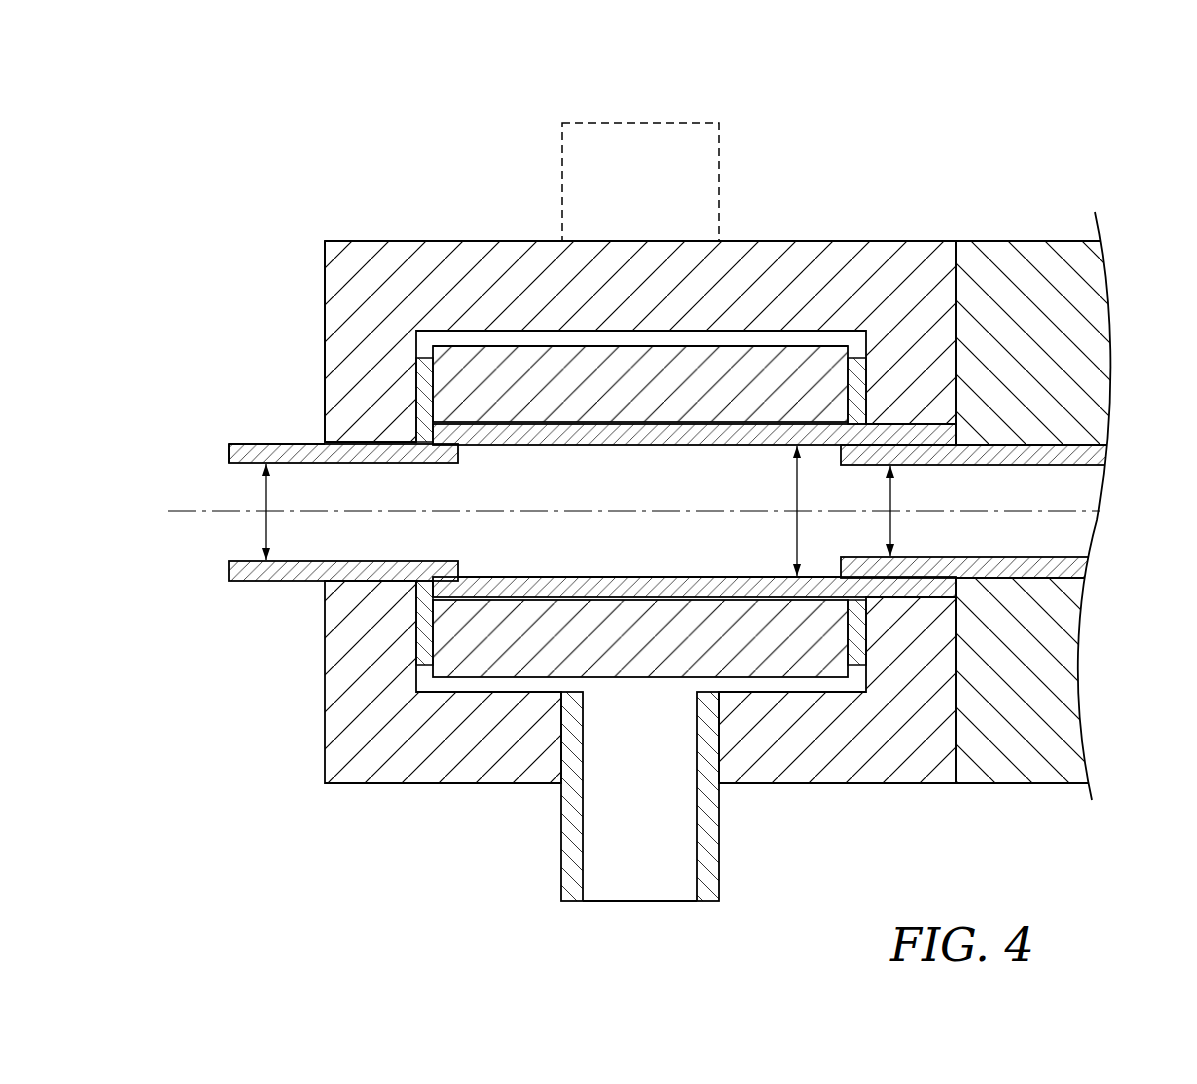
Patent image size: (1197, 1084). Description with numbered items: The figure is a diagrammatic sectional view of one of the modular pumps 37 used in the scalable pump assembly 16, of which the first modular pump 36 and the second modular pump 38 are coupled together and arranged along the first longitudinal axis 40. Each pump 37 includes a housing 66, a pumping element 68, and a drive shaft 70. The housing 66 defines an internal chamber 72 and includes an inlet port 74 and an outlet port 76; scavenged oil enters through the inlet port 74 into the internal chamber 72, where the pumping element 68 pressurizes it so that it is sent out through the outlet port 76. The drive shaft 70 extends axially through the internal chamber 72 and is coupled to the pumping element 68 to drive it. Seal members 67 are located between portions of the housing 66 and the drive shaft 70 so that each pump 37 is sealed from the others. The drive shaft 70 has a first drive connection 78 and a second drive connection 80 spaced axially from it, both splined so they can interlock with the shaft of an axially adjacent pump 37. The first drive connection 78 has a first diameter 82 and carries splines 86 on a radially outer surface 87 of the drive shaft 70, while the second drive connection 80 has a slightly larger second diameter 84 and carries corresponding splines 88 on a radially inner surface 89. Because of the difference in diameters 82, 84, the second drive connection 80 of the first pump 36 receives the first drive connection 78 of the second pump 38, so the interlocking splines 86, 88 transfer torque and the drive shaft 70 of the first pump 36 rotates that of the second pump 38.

The scalable pump assembly 16 is at (940, 116).
The first modular pump 36 is at (321, 271).
The pump 37 is at (315, 186).
The second modular pump 38 is at (1049, 216).
The first longitudinal axis 40 is at (181, 512).
The housing 66 is at (414, 236).
The seal members 67 is at (421, 633).
The pumping element 68 is at (806, 345).
The drive shaft 70 is at (274, 583).
The internal chamber 72 is at (546, 340).
The inlet port 74 is at (723, 161).
The outlet port 76 is at (730, 856).
The first drive connection 78 is at (243, 411).
The second drive connection 80 is at (913, 422).
The first diameter 82 is at (265, 505).
The second diameter 84 is at (796, 503).
The splines 86 is at (300, 442).
The radially outer surface 87 is at (248, 444).
The corresponding splines 88 is at (920, 577).
The radially inner surface 89 is at (713, 577).